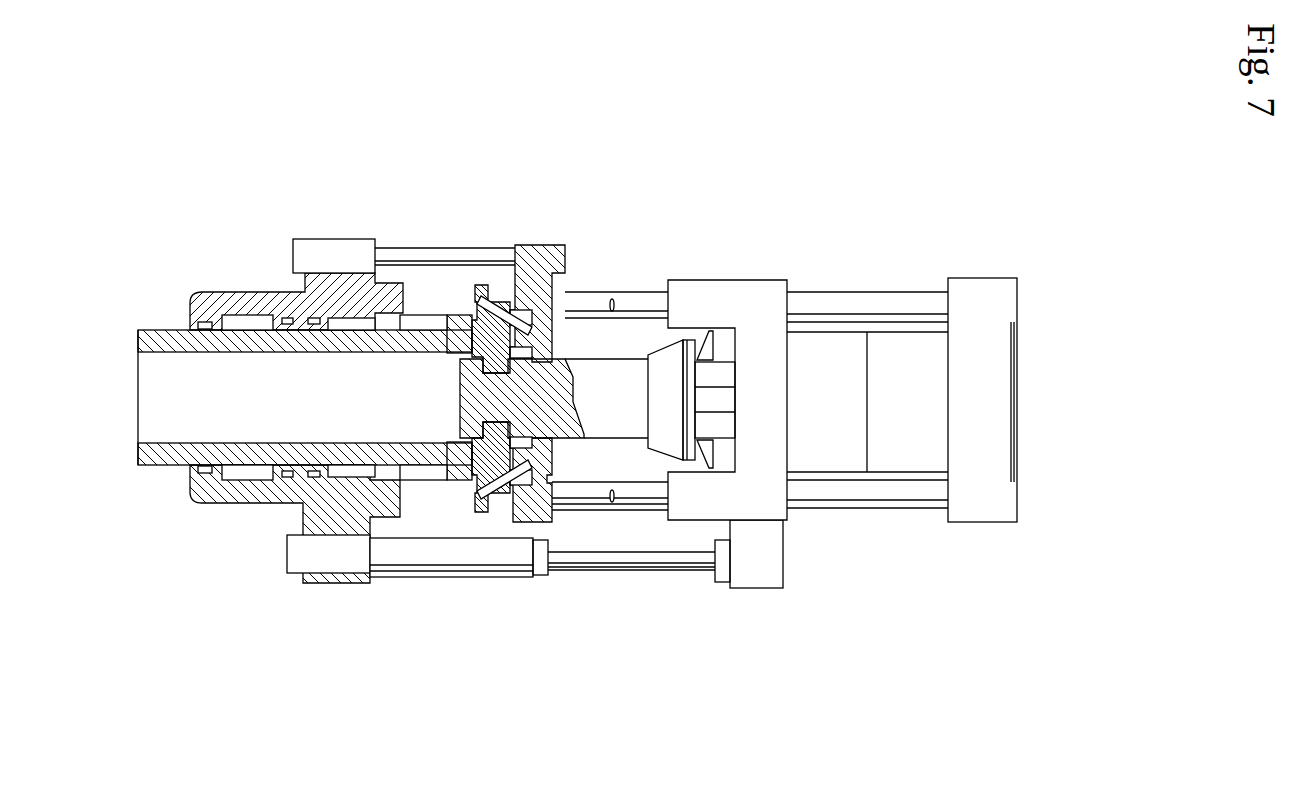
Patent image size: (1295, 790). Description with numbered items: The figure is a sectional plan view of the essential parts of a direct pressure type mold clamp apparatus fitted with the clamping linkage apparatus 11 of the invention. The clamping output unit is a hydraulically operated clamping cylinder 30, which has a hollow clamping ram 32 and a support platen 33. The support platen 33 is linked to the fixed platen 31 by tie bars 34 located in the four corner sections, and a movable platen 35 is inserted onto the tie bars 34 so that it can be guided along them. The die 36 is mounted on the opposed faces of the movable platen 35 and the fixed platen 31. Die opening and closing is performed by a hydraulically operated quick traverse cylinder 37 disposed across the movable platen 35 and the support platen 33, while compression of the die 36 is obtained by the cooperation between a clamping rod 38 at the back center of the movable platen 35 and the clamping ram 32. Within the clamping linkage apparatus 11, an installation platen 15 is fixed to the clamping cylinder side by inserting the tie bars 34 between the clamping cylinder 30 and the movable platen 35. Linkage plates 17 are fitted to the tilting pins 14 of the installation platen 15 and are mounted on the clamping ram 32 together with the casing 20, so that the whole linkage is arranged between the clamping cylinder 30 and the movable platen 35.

The clamping linkage apparatus 11 is at (534, 230).
The tilting pin 14 is at (483, 300).
The installation platen 15 is at (559, 319).
The linkage plate 17 is at (533, 338).
The casing 20 is at (480, 292).
The clamping cylinder 30 is at (243, 271).
The fixed platen 31 is at (973, 310).
The clamping ram 32 is at (337, 300).
The support platen 33 is at (340, 520).
The tie bar 34 is at (820, 303).
The movable platen 35 is at (760, 330).
The die 36 is at (832, 452).
The quick traverse cylinder 37 is at (493, 565).
The clamping rod 38 is at (625, 380).